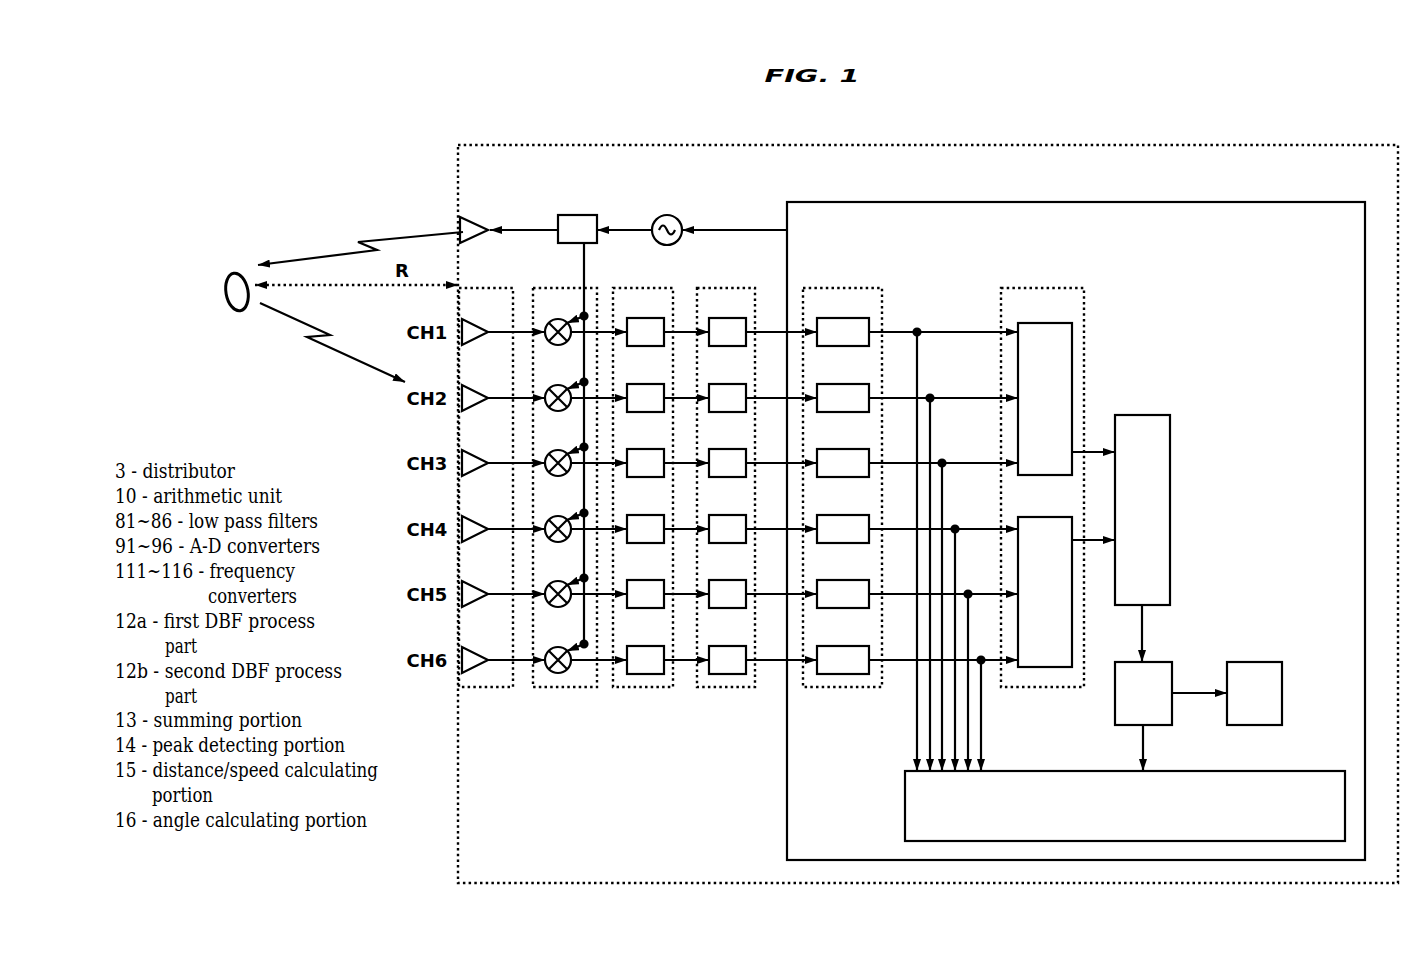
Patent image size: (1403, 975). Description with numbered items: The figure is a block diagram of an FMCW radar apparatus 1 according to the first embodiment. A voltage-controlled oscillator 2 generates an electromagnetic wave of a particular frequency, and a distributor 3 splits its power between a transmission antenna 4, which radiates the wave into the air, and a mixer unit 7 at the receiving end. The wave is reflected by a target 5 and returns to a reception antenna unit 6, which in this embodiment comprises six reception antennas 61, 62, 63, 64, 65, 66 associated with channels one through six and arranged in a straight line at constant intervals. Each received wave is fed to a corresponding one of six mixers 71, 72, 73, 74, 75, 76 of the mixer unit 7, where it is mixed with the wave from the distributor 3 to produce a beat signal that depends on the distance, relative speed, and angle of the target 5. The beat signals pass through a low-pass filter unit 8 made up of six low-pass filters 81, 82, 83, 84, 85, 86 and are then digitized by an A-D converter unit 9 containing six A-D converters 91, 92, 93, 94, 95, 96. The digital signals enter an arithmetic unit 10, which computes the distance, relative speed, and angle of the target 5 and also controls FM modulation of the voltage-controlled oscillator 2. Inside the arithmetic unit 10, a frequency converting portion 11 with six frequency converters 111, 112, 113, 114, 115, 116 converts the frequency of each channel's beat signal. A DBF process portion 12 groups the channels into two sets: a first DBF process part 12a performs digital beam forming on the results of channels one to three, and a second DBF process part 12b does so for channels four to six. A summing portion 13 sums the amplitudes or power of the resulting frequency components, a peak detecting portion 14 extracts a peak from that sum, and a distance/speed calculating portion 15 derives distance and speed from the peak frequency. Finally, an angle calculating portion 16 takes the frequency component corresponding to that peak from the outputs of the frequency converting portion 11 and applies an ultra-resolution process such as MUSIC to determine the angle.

The radar apparatus 1 is at (935, 144).
The voltage-controlled oscillator 2 is at (670, 215).
The distributor 3 is at (581, 215).
The transmission antenna 4 is at (474, 223).
The target 5 is at (234, 274).
The reception antenna unit 6 is at (491, 689).
The mixer unit 7 is at (566, 689).
The low-pass filter unit 8 is at (646, 689).
The A-D converter unit 9 is at (730, 689).
The arithmetic unit 10 is at (1014, 200).
The frequency converting portion 11 is at (863, 288).
The DBF process portion 12 is at (1068, 288).
The first DBF process part 12a is at (1047, 386).
The second DBF process part 12b is at (1047, 579).
The summing portion 13 is at (1144, 415).
The peak detecting portion 14 is at (1155, 662).
The distance/speed calculating portion 15 is at (1256, 662).
The angle calculating portion 16 is at (1289, 771).
The reception antenna 61 is at (476, 316).
The reception antenna 62 is at (476, 382).
The reception antenna 63 is at (476, 447).
The reception antenna 64 is at (476, 513).
The reception antenna 65 is at (476, 578).
The reception antenna 66 is at (476, 644).
The mixer 71 is at (557, 316).
The mixer 72 is at (557, 382).
The mixer 73 is at (557, 447).
The mixer 74 is at (557, 513).
The mixer 75 is at (557, 578).
The mixer 76 is at (557, 644).
The low-pass filter 81 is at (646, 319).
The low-pass filter 82 is at (646, 385).
The low-pass filter 83 is at (646, 450).
The low-pass filter 84 is at (646, 516).
The low-pass filter 85 is at (646, 581).
The low-pass filter 86 is at (646, 647).
The A-D converter 91 is at (728, 319).
The A-D converter 92 is at (728, 385).
The A-D converter 93 is at (728, 450).
The A-D converter 94 is at (728, 516).
The A-D converter 95 is at (728, 581).
The A-D converter 96 is at (728, 647).
The frequency converter 111 is at (843, 319).
The frequency converter 112 is at (843, 385).
The frequency converter 113 is at (843, 450).
The frequency converter 114 is at (843, 516).
The frequency converter 115 is at (843, 581).
The frequency converter 116 is at (843, 647).